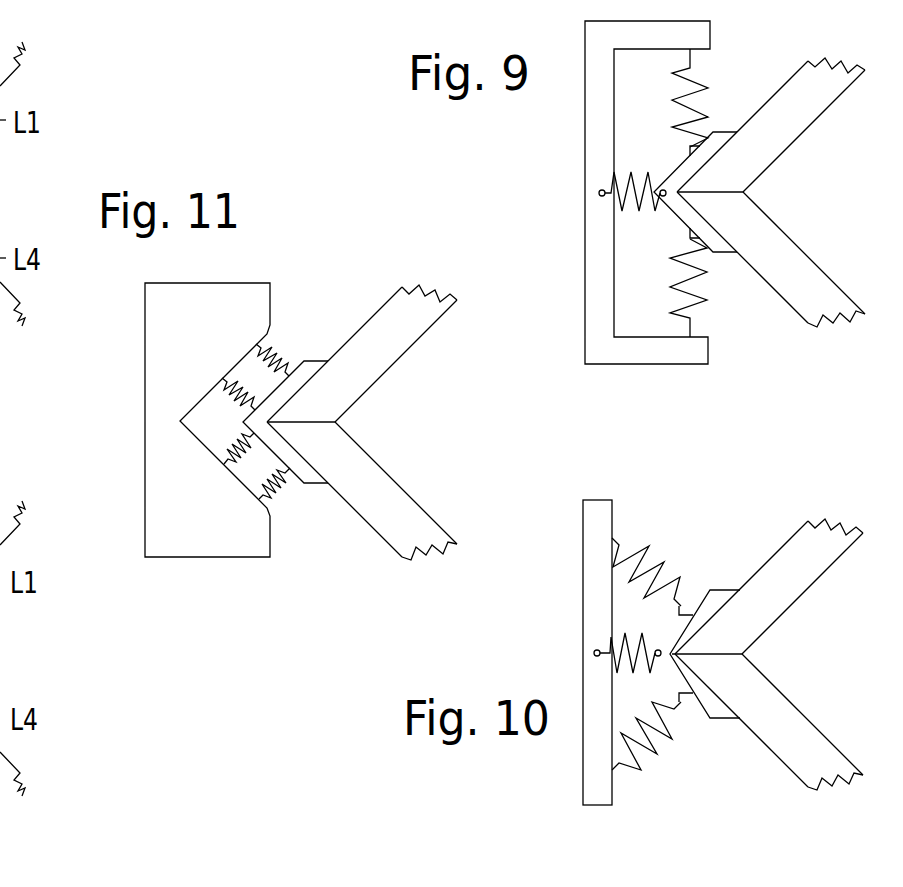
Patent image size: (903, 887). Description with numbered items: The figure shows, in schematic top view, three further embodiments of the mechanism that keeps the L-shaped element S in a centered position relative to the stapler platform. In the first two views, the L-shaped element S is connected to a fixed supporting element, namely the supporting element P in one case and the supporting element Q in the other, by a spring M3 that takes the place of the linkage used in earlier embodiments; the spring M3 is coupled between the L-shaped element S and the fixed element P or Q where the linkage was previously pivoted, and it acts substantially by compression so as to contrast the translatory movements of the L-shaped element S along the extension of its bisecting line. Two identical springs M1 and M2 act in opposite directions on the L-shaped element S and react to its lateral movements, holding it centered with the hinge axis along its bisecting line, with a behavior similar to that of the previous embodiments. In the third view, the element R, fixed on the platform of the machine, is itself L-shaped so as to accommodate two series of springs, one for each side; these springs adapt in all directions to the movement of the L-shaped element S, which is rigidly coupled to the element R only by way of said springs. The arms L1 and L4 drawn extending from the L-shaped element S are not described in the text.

In FIG. 9, the supporting element P is at (597, 264).
In FIG. 10, the supporting element Q is at (593, 570).
In FIG. 11, the element R is at (155, 477).
In FIG. 9, the L-shaped element S is at (723, 138).
In FIG. 10, the L-shaped element S is at (718, 597).
In FIG. 11, the L-shaped element S is at (315, 366).
In FIG. 9, the first lever arm L1 is at (792, 127).
In FIG. 10, the first lever arm L1 is at (788, 587).
In FIG. 11, the first lever arm L1 is at (382, 357).
In FIG. 9, the fourth lever arm L4 is at (790, 264).
In FIG. 10, the fourth lever arm L4 is at (788, 726).
In FIG. 11, the fourth lever arm L4 is at (382, 494).
In FIG. 9, the spring M1 is at (667, 98).
In FIG. 10, the spring M1 is at (646, 560).
In FIG. 9, the spring M2 is at (667, 288).
In FIG. 10, the spring M2 is at (646, 747).
In FIG. 9, the spring M3 is at (632, 170).
In FIG. 10, the spring M3 is at (611, 640).